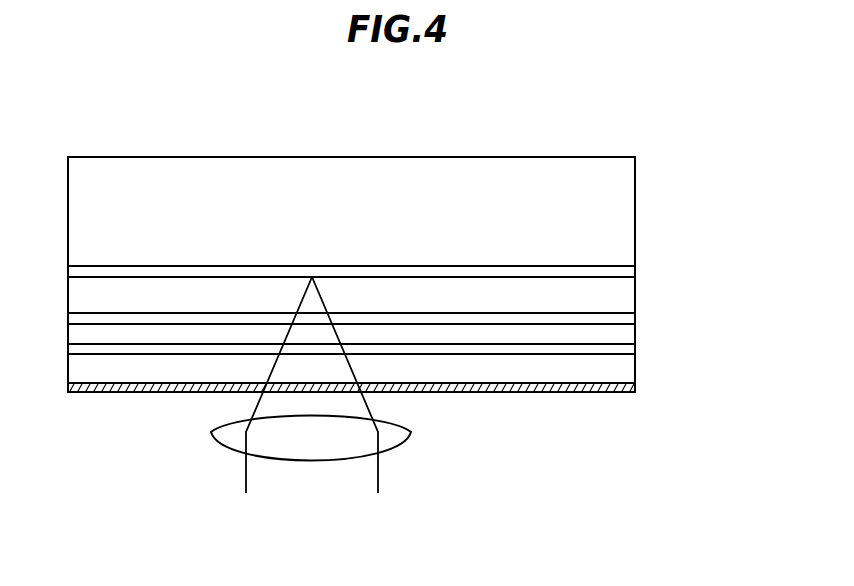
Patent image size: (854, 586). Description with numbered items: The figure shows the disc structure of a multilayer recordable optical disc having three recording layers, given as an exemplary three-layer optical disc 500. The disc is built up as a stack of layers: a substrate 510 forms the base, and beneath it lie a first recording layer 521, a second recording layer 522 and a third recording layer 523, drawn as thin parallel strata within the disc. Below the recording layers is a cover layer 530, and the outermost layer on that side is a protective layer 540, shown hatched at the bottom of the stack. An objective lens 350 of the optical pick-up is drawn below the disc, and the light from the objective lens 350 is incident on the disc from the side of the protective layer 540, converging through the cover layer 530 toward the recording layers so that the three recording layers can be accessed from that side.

The three-layer optical disc 500 is at (543, 157).
The substrate 510 is at (628, 216).
The first recording layer 521 is at (627, 271).
The second recording layer 522 is at (628, 319).
The third recording layer 523 is at (628, 349).
The cover layer 530 is at (628, 371).
The protective layer 540 is at (628, 391).
The objective lens 350 is at (411, 432).